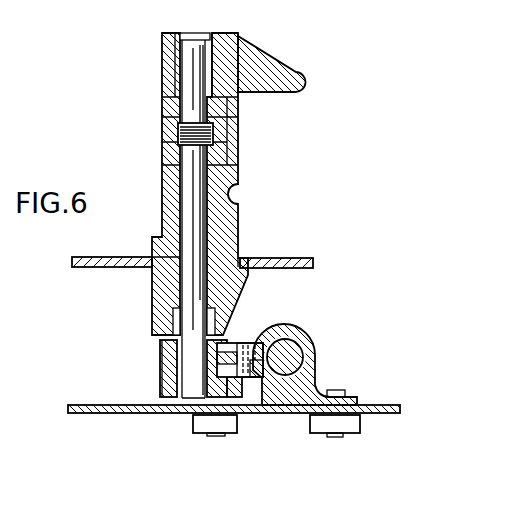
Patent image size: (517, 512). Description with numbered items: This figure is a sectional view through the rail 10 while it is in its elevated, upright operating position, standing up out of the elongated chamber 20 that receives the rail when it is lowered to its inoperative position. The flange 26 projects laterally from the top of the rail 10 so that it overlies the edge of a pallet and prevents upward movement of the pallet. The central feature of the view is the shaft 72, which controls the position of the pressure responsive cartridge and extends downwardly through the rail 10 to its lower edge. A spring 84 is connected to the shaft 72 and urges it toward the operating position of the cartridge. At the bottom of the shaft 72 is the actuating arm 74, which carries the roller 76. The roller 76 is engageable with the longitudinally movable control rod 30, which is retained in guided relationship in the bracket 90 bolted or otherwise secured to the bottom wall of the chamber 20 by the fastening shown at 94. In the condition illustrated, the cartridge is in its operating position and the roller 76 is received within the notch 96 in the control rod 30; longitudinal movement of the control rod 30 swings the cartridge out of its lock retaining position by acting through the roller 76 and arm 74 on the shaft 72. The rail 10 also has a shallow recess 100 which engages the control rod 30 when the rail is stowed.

The rail 10 is at (162, 45).
The flange 26 is at (297, 74).
The spring 84 is at (178, 134).
The shallow recess 100 is at (233, 191).
The shaft 72 is at (197, 207).
The chamber 20 is at (128, 330).
The actuating arm 74 is at (228, 342).
The control rod 30 is at (306, 336).
The bracket 90 is at (312, 367).
The roller 76 is at (253, 378).
The notch 96 is at (286, 400).
The bolt 94 is at (356, 430).